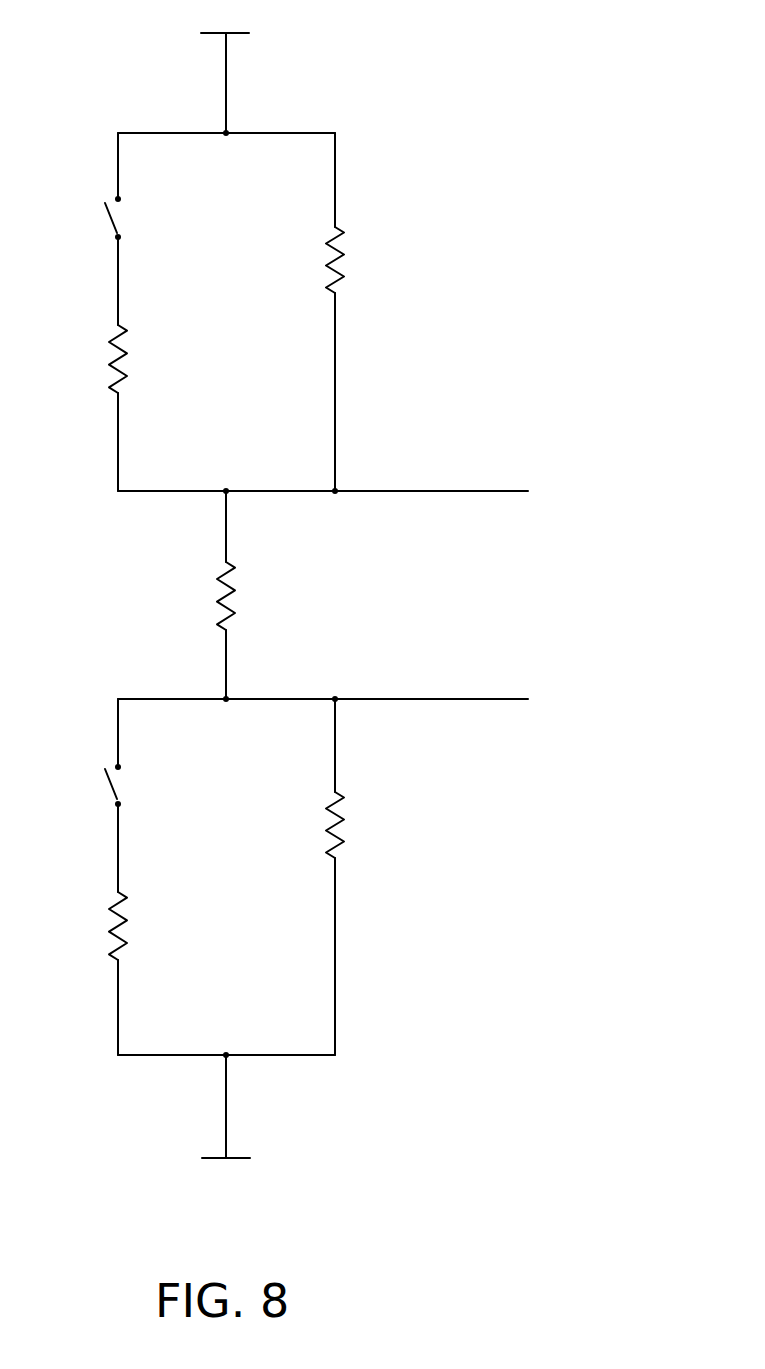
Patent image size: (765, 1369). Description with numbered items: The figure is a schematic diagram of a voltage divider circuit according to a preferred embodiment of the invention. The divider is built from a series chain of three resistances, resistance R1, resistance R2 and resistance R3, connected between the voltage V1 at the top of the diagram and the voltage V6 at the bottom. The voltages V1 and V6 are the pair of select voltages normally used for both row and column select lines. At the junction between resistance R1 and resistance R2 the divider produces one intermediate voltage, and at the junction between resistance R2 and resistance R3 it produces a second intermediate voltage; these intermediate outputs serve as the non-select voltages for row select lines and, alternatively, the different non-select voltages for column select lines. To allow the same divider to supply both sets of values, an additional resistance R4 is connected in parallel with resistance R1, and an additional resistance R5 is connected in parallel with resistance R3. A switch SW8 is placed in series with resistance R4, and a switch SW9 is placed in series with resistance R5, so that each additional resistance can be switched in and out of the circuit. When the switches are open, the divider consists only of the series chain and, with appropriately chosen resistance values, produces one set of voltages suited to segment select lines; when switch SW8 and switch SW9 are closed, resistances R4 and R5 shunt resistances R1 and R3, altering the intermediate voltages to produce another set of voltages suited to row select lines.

The voltage V1 is at (225, 67).
The switch SW8 is at (84, 218).
The resistance R4 is at (98, 359).
The resistance R1 is at (358, 260).
The resistance R2 is at (207, 596).
The switch SW9 is at (84, 785).
The resistance R3 is at (353, 825).
The resistance R5 is at (97, 926).
The voltage V6 is at (226, 1127).